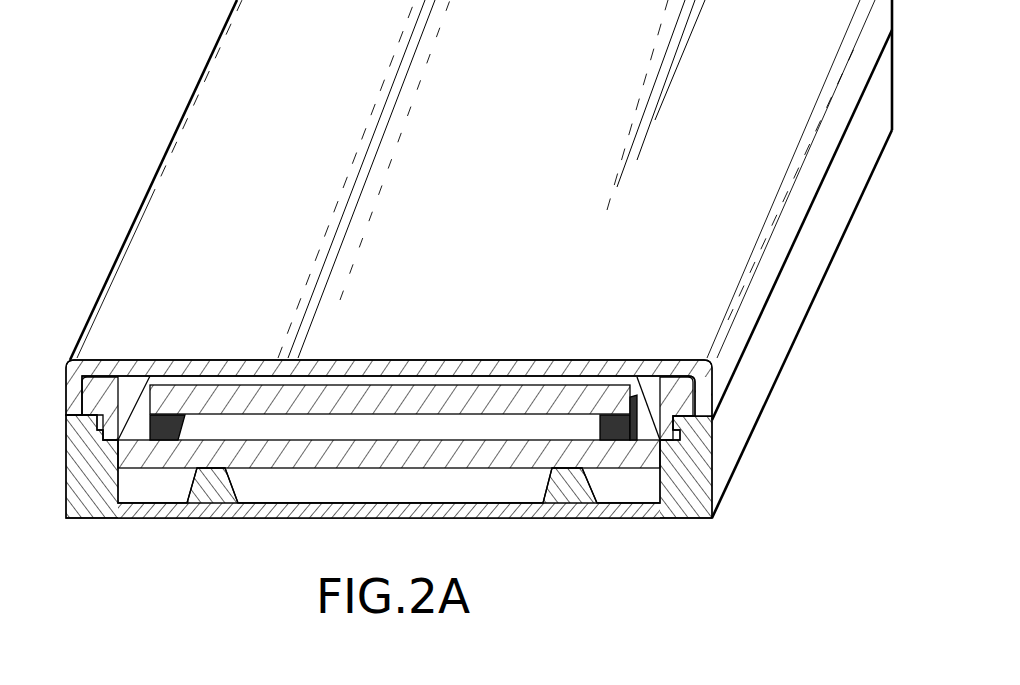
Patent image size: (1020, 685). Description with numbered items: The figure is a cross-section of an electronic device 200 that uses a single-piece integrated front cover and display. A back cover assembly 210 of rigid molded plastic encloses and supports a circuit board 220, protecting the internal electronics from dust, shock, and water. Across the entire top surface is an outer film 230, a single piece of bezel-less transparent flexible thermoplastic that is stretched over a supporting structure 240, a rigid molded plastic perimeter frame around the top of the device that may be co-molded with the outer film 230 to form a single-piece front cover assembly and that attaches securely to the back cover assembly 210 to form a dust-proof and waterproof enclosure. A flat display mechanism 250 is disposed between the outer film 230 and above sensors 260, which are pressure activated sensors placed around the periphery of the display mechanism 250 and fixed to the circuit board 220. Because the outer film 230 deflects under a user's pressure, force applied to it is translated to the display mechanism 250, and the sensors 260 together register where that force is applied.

The electronic device 200 is at (115, 82).
The back cover assembly 210 is at (94, 507).
The circuit board 220 is at (442, 447).
The outer film 230 is at (522, 373).
The supporting structure 240 is at (132, 376).
The display mechanism 250 is at (592, 390).
The sensors 260 is at (183, 428).